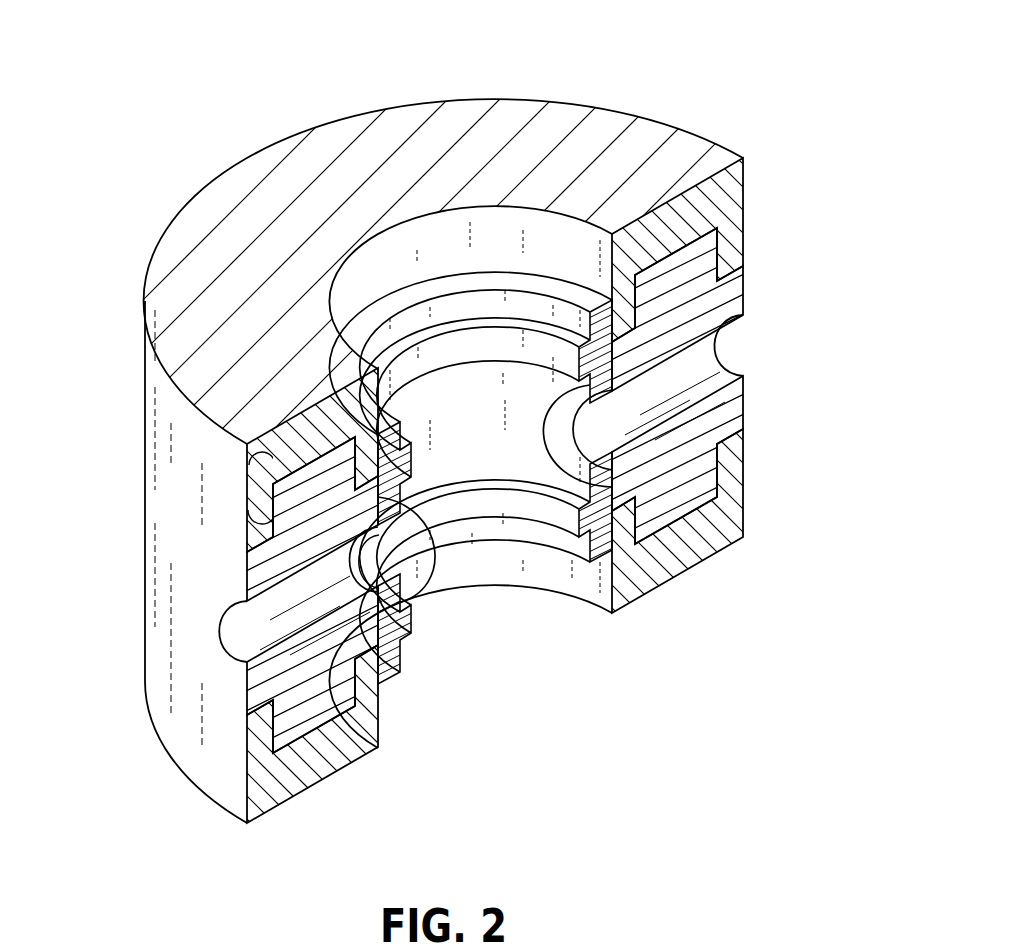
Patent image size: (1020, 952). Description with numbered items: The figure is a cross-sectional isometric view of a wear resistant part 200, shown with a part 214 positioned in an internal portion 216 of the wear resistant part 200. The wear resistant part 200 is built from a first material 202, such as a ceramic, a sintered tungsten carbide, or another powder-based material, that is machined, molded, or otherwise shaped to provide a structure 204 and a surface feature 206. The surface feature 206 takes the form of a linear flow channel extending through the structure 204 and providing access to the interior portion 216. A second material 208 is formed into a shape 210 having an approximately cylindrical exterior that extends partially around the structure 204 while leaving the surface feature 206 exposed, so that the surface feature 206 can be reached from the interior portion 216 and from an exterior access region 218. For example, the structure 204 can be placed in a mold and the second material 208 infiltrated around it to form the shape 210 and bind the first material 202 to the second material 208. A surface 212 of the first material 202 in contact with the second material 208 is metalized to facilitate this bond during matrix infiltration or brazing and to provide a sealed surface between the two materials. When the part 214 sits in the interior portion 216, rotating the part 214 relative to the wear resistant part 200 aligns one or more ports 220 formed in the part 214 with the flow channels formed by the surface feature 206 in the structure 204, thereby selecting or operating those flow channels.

The wear resistant part 200 is at (190, 198).
The first material 202 is at (722, 302).
The structure 204 is at (300, 500).
The surface feature 206 is at (735, 370).
The second material 208 is at (678, 212).
The shape 210 is at (745, 206).
The surface 212 is at (292, 447).
The part 214 is at (445, 268).
The interior portion 216 is at (468, 567).
The exterior access region 218 is at (742, 346).
The ports 220 is at (525, 468).